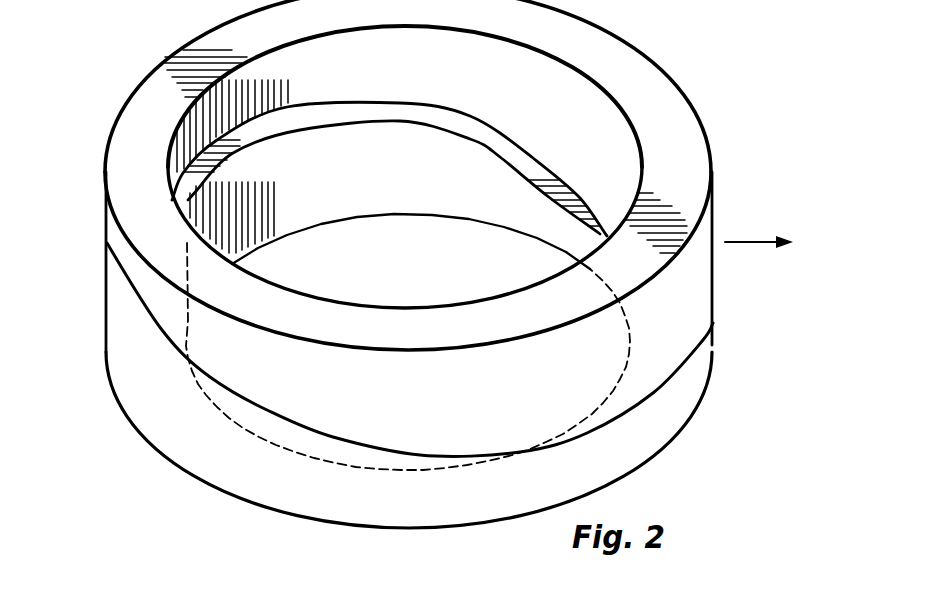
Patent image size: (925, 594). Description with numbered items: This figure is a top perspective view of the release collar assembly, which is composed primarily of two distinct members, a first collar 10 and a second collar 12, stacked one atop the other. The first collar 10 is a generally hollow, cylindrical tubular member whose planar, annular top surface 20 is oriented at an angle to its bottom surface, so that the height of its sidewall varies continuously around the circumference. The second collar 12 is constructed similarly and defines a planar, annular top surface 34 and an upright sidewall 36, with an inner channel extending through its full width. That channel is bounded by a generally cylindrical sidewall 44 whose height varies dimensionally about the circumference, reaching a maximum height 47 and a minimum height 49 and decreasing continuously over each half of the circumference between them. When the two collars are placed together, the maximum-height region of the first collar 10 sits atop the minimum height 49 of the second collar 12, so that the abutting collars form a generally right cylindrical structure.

The first collar 10 is at (170, 400).
The second collar 12 is at (477, 421).
The top surface 20 is at (280, 118).
The top surface 34 is at (651, 90).
The upright sidewall 36 is at (680, 302).
The sidewall 44 is at (498, 104).
The maximum height 47 is at (642, 170).
The minimum height 49 is at (170, 170).